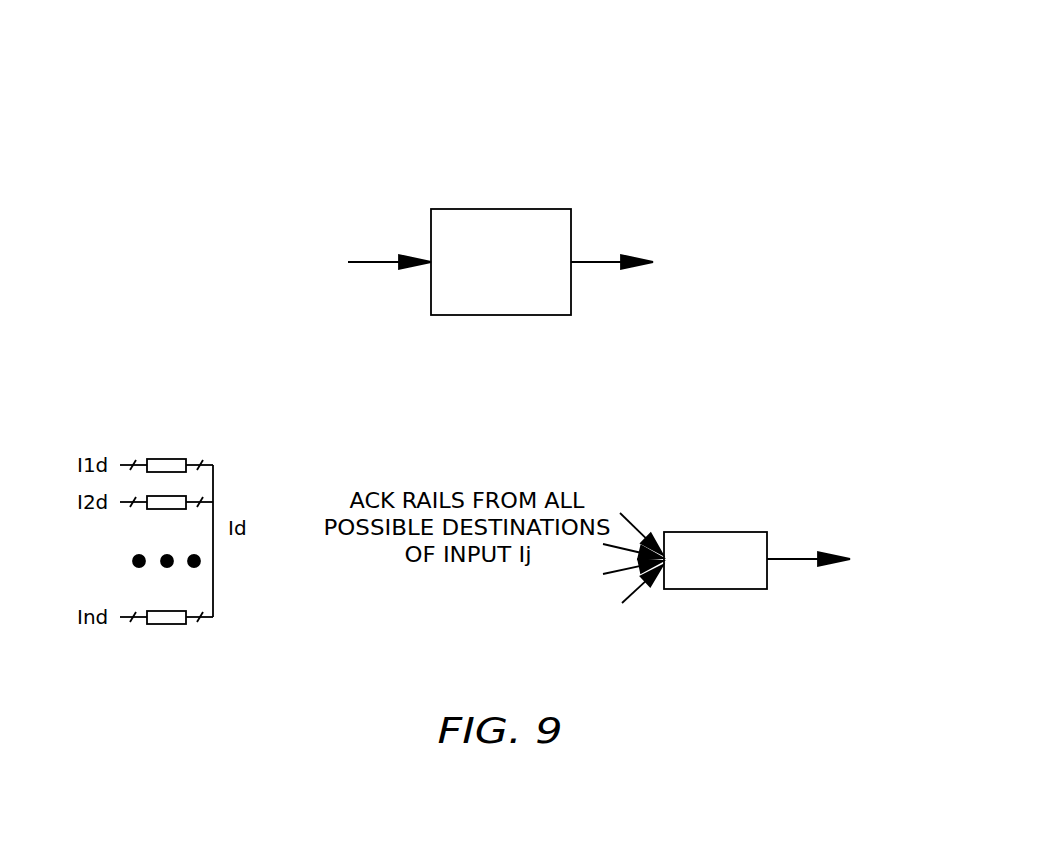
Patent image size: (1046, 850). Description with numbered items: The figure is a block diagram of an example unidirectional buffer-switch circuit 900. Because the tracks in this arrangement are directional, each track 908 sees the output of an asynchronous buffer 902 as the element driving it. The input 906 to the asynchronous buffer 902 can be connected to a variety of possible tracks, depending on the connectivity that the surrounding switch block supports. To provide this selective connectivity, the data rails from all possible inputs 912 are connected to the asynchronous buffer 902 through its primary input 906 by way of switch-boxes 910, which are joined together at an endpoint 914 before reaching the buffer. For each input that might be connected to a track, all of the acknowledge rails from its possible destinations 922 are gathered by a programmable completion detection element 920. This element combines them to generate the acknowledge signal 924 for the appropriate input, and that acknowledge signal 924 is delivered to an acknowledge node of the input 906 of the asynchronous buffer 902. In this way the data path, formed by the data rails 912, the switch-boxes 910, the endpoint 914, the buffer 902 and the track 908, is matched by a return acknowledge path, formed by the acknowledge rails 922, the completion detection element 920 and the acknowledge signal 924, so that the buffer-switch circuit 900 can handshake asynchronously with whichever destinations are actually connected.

The unidirectional buffer-switch circuit 900 is at (736, 64).
The asynchronous buffer 902 is at (516, 208).
The input 906 is at (368, 260).
The track 908 is at (611, 260).
The switch-boxes 910 is at (177, 458).
The data rails from all possible inputs 912 is at (131, 462).
The endpoint 914 is at (214, 590).
The programmable completion detection element 920 is at (715, 531).
The acknowledge rails from possible destinations 922 is at (622, 601).
The acknowledge signal 924 is at (795, 557).